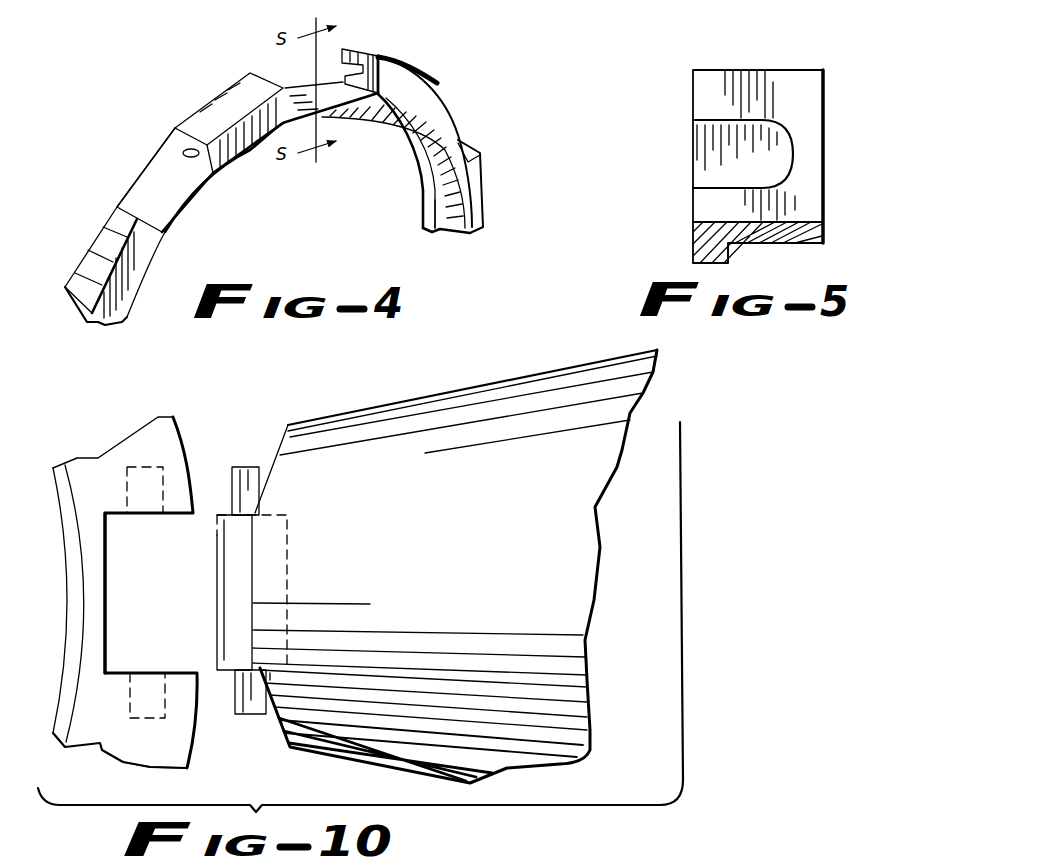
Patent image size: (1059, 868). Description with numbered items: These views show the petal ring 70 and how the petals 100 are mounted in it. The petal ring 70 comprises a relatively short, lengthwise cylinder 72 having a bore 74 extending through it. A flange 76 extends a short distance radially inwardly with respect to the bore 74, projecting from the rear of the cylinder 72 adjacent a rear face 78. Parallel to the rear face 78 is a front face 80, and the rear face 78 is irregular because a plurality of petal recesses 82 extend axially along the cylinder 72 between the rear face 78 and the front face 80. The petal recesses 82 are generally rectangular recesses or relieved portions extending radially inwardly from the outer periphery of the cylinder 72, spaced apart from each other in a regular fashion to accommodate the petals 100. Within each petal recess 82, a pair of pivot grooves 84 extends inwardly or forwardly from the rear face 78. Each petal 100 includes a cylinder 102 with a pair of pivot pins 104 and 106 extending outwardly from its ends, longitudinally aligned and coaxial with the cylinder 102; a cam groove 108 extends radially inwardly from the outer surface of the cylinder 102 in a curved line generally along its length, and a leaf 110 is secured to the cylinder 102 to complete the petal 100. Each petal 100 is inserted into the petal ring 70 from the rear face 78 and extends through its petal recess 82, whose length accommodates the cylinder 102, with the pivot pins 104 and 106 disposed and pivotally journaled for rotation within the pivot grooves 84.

In FIG. 4, the petal ring 70 is at (440, 52).
In FIG. 5, the petal ring 70 is at (836, 70).
In FIG. 10, the petal ring 70 is at (106, 441).
In FIG. 4, the cylinder 72 is at (488, 185).
In FIG. 10, the cylinder 72 is at (100, 748).
In FIG. 4, the bore 74 is at (452, 236).
In FIG. 5, the bore 74 is at (818, 246).
In FIG. 10, the bore 74 is at (178, 448).
In FIG. 4, the flange 76 is at (432, 204).
In FIG. 5, the flange 76 is at (730, 258).
In FIG. 10, the flange 76 is at (72, 597).
In FIG. 5, the rear face 78 is at (695, 236).
In FIG. 4, the front face 80 is at (437, 93).
In FIG. 5, the front face 80 is at (822, 192).
In FIG. 4, the petal recess 82 is at (150, 200).
In FIG. 5, the petal recess 82 is at (820, 120).
In FIG. 10, the petal recess 82 is at (175, 672).
In FIG. 4, the pivot groove 84 is at (188, 153).
In FIG. 5, the pivot groove 84 is at (704, 188).
In FIG. 10, the pivot groove 84 is at (148, 686).
In FIG. 10, the petal 100 is at (347, 405).
In FIG. 10, the cylinder 102 is at (220, 587).
In FIG. 10, the pivot pin 104 is at (247, 477).
In FIG. 10, the pivot pin 106 is at (234, 716).
In FIG. 10, the cam groove 108 is at (217, 530).
In FIG. 10, the leaf 110 is at (520, 495).